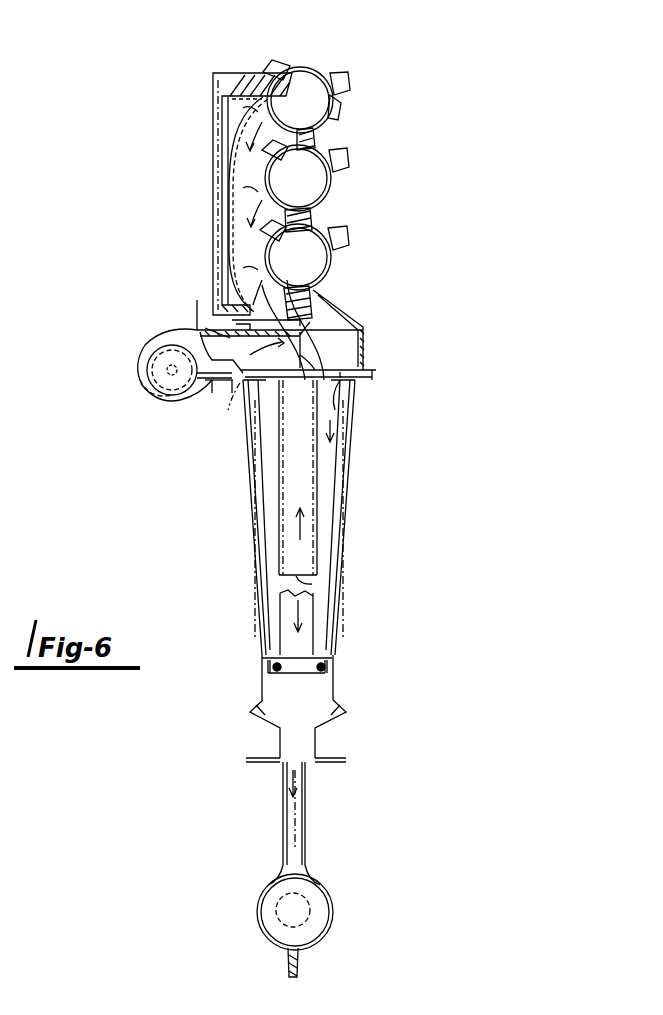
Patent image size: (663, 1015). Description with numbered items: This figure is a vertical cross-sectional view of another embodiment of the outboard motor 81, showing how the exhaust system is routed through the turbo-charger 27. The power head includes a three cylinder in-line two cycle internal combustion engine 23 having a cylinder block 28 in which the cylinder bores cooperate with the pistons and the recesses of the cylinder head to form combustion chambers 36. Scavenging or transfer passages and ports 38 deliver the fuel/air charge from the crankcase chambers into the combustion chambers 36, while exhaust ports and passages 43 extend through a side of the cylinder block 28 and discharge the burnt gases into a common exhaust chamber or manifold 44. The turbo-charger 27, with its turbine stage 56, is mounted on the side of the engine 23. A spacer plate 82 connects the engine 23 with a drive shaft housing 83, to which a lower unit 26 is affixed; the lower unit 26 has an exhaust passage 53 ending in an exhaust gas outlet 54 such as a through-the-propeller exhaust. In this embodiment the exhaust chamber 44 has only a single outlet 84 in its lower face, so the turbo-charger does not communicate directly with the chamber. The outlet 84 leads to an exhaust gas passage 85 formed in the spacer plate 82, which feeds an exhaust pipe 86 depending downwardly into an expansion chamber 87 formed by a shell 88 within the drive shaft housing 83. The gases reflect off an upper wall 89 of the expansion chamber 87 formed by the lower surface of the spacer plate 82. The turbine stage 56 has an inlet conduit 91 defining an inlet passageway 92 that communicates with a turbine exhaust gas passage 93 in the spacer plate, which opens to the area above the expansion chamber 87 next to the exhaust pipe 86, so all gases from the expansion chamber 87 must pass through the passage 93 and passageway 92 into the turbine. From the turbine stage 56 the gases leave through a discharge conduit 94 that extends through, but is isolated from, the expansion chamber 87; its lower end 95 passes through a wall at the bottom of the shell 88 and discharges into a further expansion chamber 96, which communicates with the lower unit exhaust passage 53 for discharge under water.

The internal combustion engine 23 is at (205, 121).
The lower unit 26 is at (307, 787).
The turbo-charger 27 is at (147, 357).
The cylinder block 28 is at (331, 101).
The combustion chamber 36 is at (307, 87).
The scavenging or transfer passages and ports 38 is at (285, 62).
The exhaust ports and passages 43 is at (256, 113).
The exhaust chamber or manifold 44 is at (241, 233).
The exhaust passage 53 is at (293, 812).
The exhaust gas outlet 54 is at (300, 895).
The turbine stage 56 is at (158, 377).
The outboard motor 81 is at (395, 346).
The spacer plate 82 is at (367, 358).
The drive shaft housing 83 is at (347, 480).
The exhaust gas outlet 84 is at (343, 327).
The exhaust gas passage 85 is at (333, 353).
The exhaust pipe 86 is at (313, 508).
The expansion chamber 87 is at (323, 532).
The shell 88 is at (252, 508).
The upper wall 89 is at (353, 388).
The inlet conduit 91 is at (197, 328).
The inlet passageway 92 is at (207, 330).
The turbine exhaust gas passage 93 is at (240, 390).
The discharge conduit 94 is at (210, 380).
The lower end 95 is at (283, 673).
The expansion chamber 96 is at (307, 688).